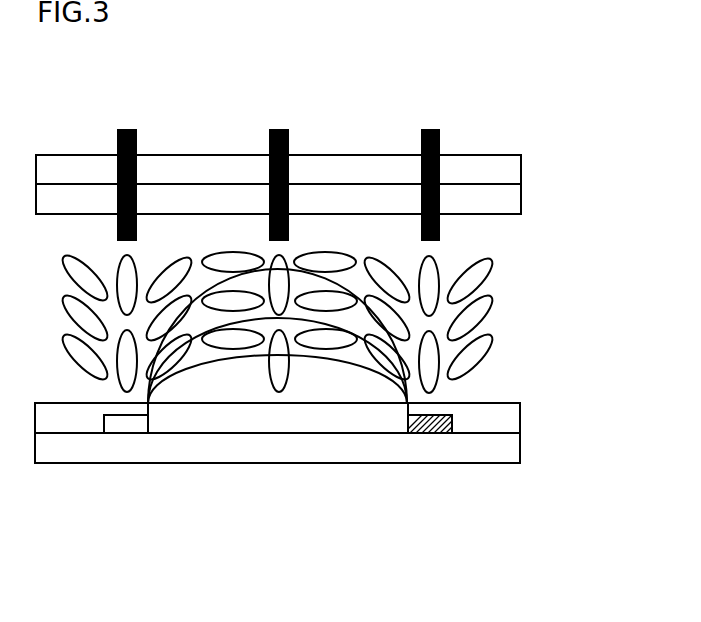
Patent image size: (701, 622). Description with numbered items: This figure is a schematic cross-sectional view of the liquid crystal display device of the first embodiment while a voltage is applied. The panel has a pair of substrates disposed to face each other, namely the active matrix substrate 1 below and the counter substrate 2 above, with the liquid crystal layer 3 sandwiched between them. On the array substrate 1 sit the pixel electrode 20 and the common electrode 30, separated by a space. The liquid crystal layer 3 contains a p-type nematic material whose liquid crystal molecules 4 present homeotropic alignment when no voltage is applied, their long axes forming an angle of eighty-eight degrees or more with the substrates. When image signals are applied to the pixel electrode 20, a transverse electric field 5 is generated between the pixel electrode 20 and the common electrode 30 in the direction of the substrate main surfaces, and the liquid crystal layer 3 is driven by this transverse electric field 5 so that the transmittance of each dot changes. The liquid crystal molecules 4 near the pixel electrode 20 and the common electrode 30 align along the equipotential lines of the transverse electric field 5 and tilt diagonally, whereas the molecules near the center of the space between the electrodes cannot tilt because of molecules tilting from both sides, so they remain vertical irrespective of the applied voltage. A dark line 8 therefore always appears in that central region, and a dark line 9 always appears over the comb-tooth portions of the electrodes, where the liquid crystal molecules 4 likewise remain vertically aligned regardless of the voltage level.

The active matrix substrate 1 is at (550, 398).
The counter substrate 2 is at (550, 151).
The liquid crystal layer 3 is at (550, 223).
The liquid crystal molecules 4 is at (472, 317).
The transverse electric field 5 is at (357, 365).
The dark line 8 is at (276, 128).
The dark line 9 is at (124, 128).
The pixel electrode 20 is at (428, 434).
The common electrode 30 is at (128, 425).